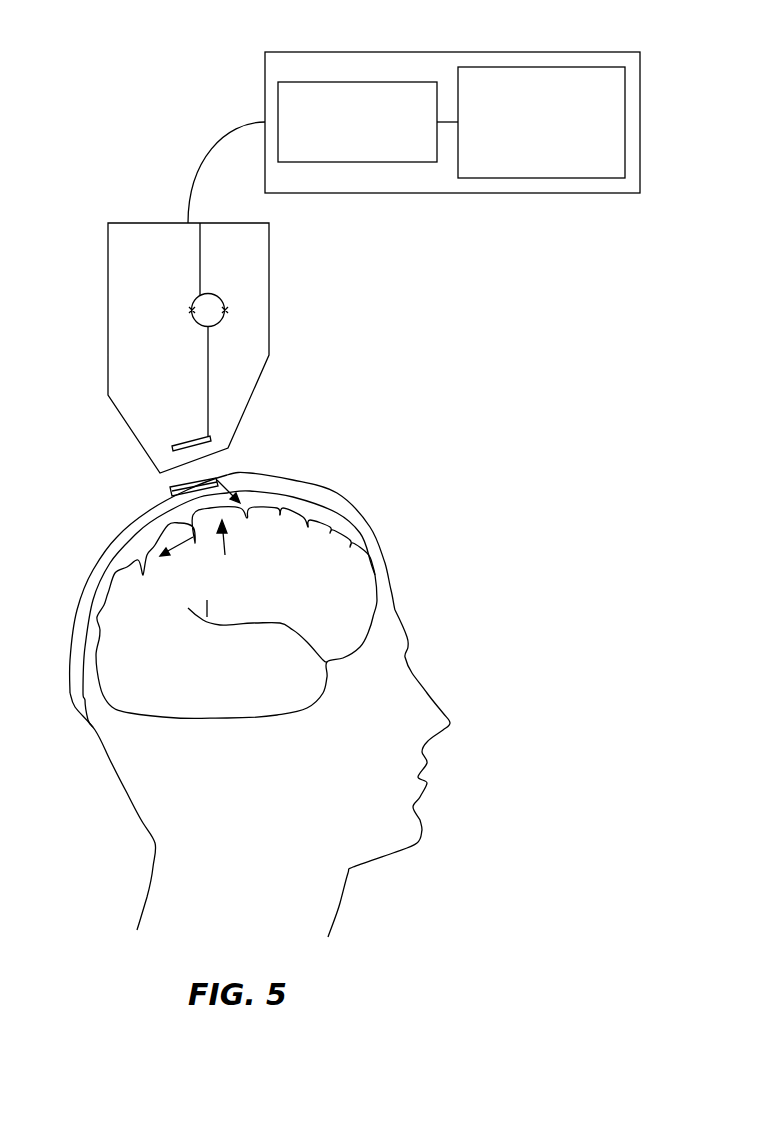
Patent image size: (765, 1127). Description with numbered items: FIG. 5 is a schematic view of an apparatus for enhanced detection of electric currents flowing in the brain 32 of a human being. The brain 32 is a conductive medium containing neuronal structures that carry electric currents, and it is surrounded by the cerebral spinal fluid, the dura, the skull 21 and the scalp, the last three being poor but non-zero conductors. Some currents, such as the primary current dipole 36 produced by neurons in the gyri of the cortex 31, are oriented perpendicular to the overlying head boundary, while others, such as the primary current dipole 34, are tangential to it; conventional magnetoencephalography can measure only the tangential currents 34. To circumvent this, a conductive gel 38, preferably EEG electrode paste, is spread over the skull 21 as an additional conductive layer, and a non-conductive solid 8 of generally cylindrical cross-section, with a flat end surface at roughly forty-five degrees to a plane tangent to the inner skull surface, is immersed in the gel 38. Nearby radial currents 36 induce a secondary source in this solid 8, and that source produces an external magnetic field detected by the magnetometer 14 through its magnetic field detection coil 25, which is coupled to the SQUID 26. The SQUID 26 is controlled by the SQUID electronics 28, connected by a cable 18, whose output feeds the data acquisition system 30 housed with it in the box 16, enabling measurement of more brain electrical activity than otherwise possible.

The non-conductive solid 8 is at (170, 488).
The magnetometer 14 is at (269, 312).
The box 16 is at (477, 52).
The connection cable 18 is at (232, 135).
The skull 21 is at (335, 490).
The magnetic field detection coil 25 is at (176, 442).
The SQUID 26 is at (195, 298).
The SQUID electronics 28 is at (368, 82).
The data acquisition system 30 is at (550, 67).
The brain cortex 31 is at (362, 608).
The brain 32 is at (278, 708).
The primary current dipole 34 is at (183, 537).
The primary current dipole 36 is at (225, 543).
The conductive gel 38 is at (275, 487).